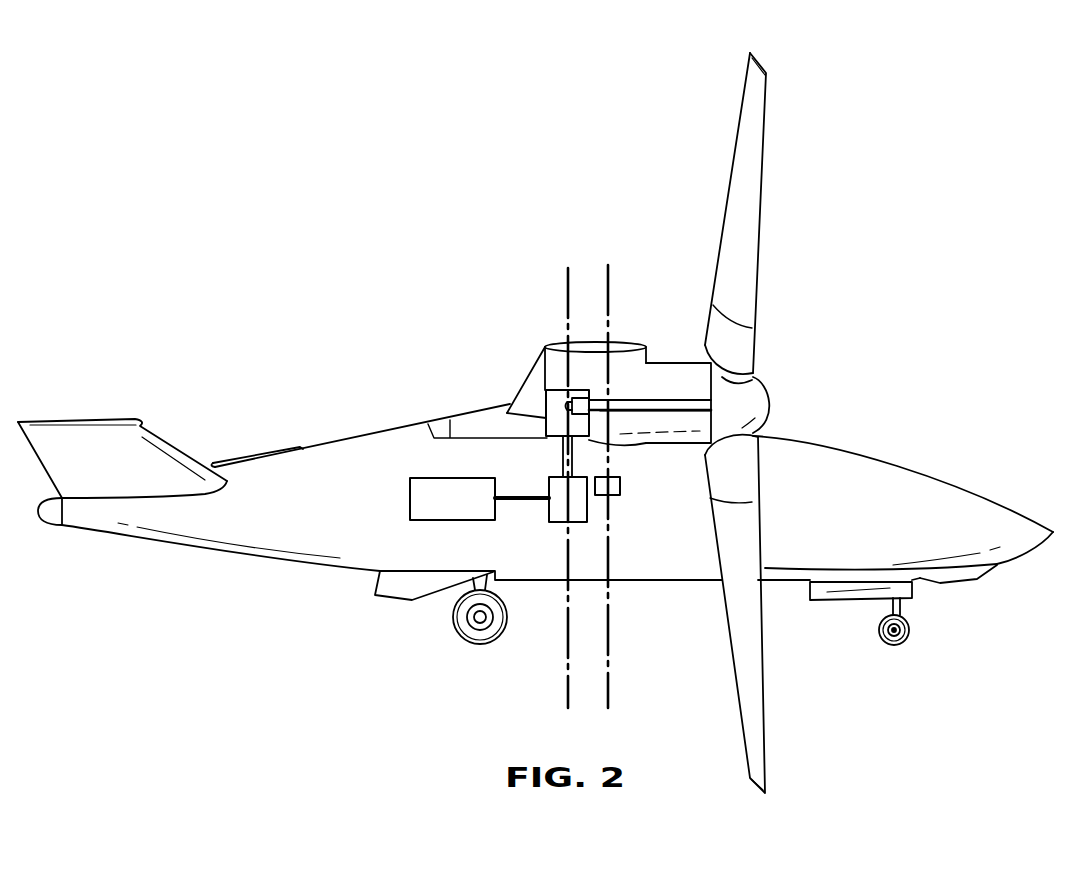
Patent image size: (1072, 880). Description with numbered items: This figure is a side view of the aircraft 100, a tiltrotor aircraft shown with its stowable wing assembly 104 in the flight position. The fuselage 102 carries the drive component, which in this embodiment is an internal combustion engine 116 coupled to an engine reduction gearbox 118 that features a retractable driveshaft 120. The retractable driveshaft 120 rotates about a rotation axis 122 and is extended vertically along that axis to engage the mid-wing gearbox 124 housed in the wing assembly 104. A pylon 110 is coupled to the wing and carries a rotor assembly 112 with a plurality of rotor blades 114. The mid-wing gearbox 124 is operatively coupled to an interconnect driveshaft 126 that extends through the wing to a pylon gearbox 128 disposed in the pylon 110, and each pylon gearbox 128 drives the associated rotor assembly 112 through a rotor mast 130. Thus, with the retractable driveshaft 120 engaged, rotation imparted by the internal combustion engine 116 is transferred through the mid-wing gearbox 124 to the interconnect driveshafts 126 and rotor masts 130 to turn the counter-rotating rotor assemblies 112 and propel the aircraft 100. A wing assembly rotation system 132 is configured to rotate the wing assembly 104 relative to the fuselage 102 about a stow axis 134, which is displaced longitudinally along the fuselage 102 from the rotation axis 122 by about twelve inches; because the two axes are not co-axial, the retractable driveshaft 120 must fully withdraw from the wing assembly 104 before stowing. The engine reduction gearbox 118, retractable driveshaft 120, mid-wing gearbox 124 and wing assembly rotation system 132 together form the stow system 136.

The aircraft 100 is at (908, 87).
The fuselage 102 is at (668, 582).
The stowable wing assembly 104 is at (455, 418).
The pylon 110 is at (683, 363).
The rotor assembly 112 is at (773, 407).
The rotor blade 114 is at (761, 203).
The internal combustion engine 116 is at (410, 498).
The engine reduction gearbox 118 is at (548, 506).
The retractable driveshaft 120 is at (562, 466).
The rotation axis 122 is at (567, 693).
The mid-wing gearbox 124 is at (560, 390).
The interconnect driveshaft 126 is at (567, 405).
The pylon gearbox 128 is at (590, 395).
The rotor mast 130 is at (655, 414).
The wing assembly rotation system 132 is at (621, 490).
The stow axis 134 is at (611, 281).
The stow system 136 is at (521, 401).